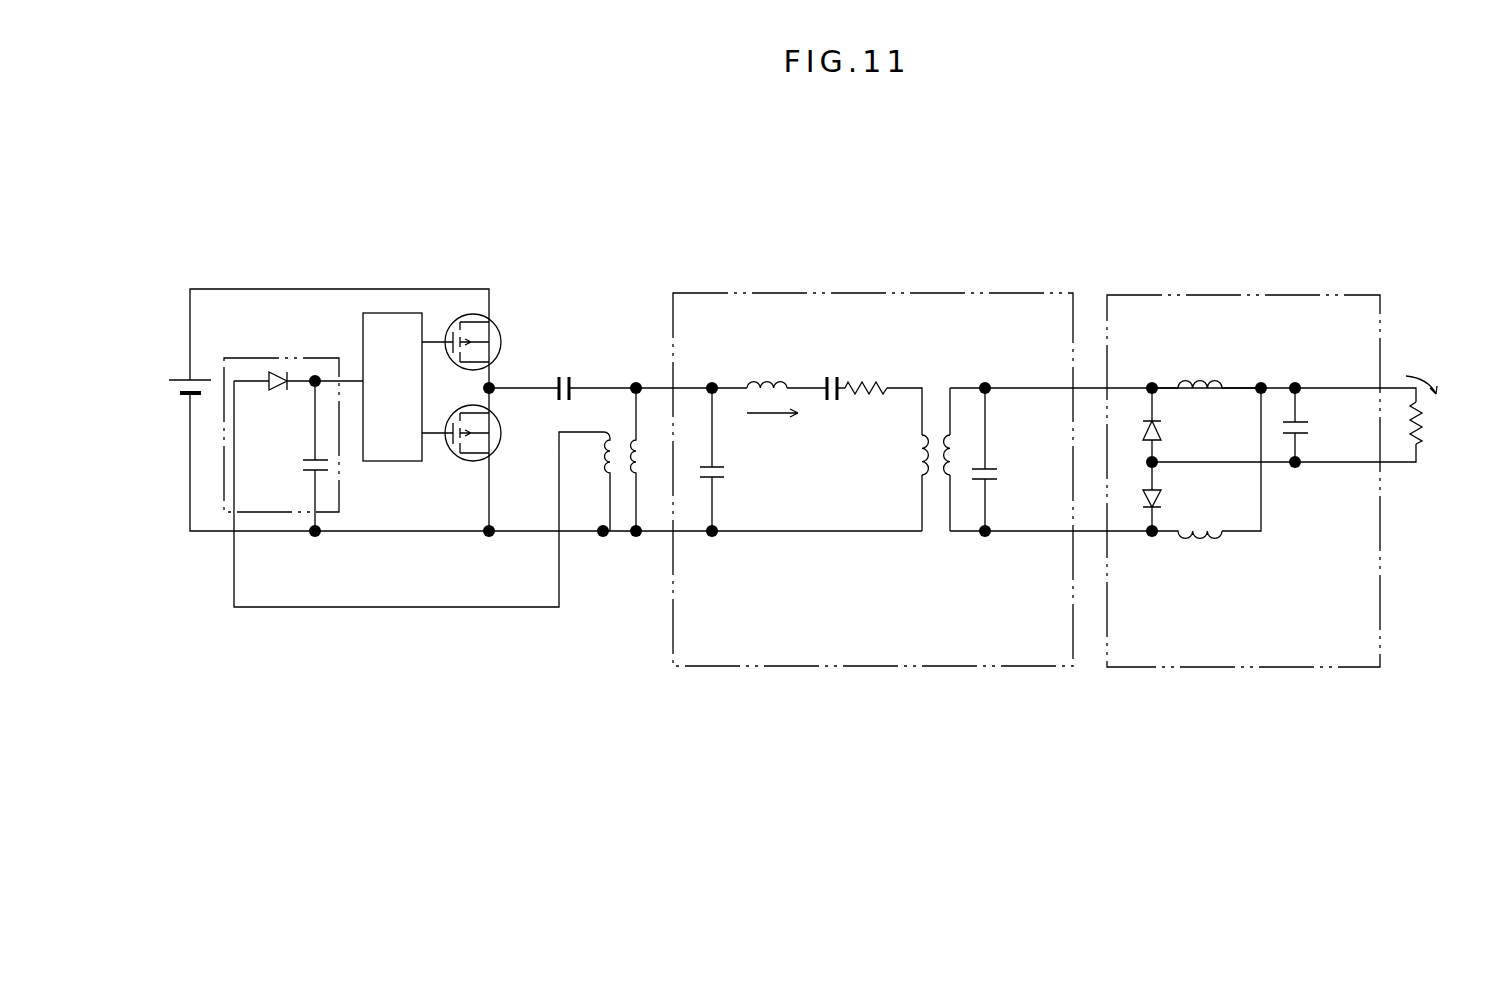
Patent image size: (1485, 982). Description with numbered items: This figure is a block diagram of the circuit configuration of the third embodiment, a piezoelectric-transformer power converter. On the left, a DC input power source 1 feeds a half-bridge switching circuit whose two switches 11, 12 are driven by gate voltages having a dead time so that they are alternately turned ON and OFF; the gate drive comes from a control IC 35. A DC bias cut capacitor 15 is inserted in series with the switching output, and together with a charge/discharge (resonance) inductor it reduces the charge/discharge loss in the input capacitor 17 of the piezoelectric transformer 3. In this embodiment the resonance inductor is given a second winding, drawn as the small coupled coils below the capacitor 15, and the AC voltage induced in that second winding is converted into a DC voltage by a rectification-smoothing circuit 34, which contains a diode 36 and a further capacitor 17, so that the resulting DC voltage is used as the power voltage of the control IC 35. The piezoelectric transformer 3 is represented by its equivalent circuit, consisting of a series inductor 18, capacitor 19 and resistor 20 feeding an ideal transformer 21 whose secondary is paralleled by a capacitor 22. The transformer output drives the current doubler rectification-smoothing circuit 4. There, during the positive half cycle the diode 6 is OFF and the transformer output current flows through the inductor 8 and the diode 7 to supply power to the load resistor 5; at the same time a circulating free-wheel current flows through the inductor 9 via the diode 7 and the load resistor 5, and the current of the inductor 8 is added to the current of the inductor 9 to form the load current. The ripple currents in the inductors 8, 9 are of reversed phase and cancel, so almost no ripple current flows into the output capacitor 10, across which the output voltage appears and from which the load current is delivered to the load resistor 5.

The DC input power source 1 is at (170, 382).
The rectification-smoothing circuit 34 is at (264, 358).
The diode 36 is at (283, 392).
The input capacitor 17 is at (296, 470).
The control IC 35 is at (407, 462).
The switch 11 is at (495, 325).
The switch 12 is at (494, 458).
The DC bias cut capacitor 15 is at (565, 373).
The piezoelectric transformer 3 is at (918, 292).
The inductor 18 is at (753, 380).
The capacitor 19 is at (831, 376).
The resistor 20 is at (879, 380).
The transformer 21 is at (937, 478).
The capacitor 22 is at (1000, 476).
The current doubler rectification-smoothing circuit 4 is at (1243, 294).
The inductor 8 is at (1195, 385).
The diode 6 is at (1163, 431).
The diode 7 is at (1163, 499).
The inductor 9 is at (1195, 545).
The output capacitor 10 is at (1310, 431).
The load resistor 5 is at (1428, 432).